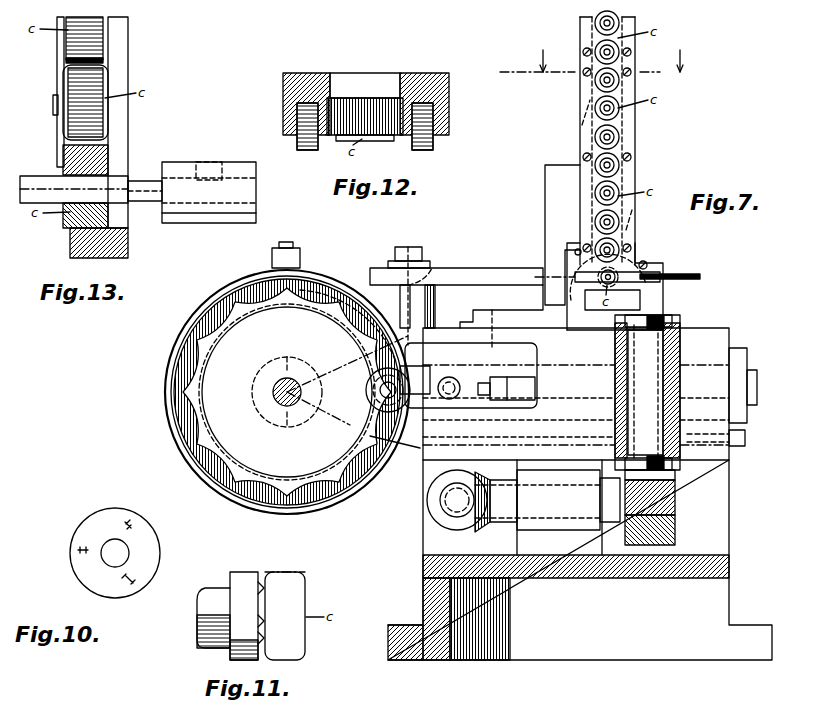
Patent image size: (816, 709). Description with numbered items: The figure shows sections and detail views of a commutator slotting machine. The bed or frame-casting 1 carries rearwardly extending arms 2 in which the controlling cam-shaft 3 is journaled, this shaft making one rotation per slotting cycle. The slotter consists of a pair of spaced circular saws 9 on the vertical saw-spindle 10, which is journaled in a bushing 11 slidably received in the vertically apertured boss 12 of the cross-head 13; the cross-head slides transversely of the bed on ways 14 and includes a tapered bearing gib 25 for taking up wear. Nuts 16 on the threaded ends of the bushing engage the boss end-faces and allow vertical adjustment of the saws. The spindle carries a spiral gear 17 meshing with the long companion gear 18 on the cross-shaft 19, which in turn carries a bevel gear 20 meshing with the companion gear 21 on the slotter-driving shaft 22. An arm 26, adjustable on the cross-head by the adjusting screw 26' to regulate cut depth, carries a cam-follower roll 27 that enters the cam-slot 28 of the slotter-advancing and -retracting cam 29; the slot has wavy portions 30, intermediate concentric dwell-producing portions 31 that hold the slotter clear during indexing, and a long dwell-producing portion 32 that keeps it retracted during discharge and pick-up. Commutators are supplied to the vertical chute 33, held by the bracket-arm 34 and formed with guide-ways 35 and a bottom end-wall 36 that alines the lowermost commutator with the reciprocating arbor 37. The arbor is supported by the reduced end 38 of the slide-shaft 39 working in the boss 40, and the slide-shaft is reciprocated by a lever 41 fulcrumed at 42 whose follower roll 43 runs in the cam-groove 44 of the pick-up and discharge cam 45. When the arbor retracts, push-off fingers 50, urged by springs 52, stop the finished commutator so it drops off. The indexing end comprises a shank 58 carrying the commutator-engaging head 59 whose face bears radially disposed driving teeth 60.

In FIG. 7, the bed or frame-casting 1 is at (432, 544).
In FIG. 7, the rearwardly extending arms 2 is at (310, 356).
In FIG. 7, the controlling cam-shaft 3 is at (273, 388).
In FIG. 7, the circular slot-cutters or saws 9 is at (660, 277).
In FIG. 7, the saw-spindle 10 is at (665, 377).
In FIG. 7, the bushing 11 is at (662, 337).
In FIG. 7, the vertically apertured boss 12 is at (696, 397).
In FIG. 7, the cross-head 13 is at (523, 335).
In FIG. 7, the ways 14 is at (490, 312).
In FIG. 7, the nuts 16 is at (673, 320).
In FIG. 7, the spiral gear 17 is at (676, 494).
In FIG. 7, the companion gear 18 is at (676, 529).
In FIG. 7, the cross-shaft 19 is at (568, 519).
In FIG. 7, the bevel gear 20 is at (483, 525).
In FIG. 7, the companion gear 21 is at (428, 486).
In FIG. 7, the slotter-driving shaft 22 is at (440, 507).
In FIG. 7, the bearing gib 25 is at (558, 437).
In FIG. 7, the arm 26 is at (468, 369).
In FIG. 7, the adjusting screw 26' is at (486, 381).
In FIG. 7, the cam-follower roll 27 is at (368, 398).
In FIG. 7, the cam-slot 28 is at (288, 492).
In FIG. 7, the slotter-advancing and -retracting cam 29 is at (313, 512).
In FIG. 7, the wavy portions 30 is at (260, 312).
In FIG. 7, the concentric dwell-producing portions 31 is at (253, 330).
In FIG. 7, the long dwell-producing portion 32 is at (353, 448).
In FIG. 13, the vertical magazine or chute 33 is at (115, 45).
In FIG. 12, the vertical magazine or chute 33 is at (435, 82).
In FIG. 7, the vertical magazine or chute 33 is at (630, 172).
In FIG. 7, the bracket-arm 34 is at (552, 194).
In FIG. 12, the commutator guide-ways 35 is at (400, 108).
In FIG. 7, the commutator guide-ways 35 is at (583, 153).
In FIG. 13, the bottom end-wall 36 is at (80, 240).
In FIG. 13, the commutator pick-up and supporting arbor 37 is at (135, 184).
In FIG. 13, the reduced end 38 is at (229, 165).
In FIG. 7, the slide-shaft 39 is at (578, 295).
In FIG. 7, the boss 40 is at (600, 306).
In FIG. 7, the lever 41 is at (478, 272).
In FIG. 7, the fulcrum 42 is at (432, 268).
In FIG. 7, the follower roll 43 is at (298, 292).
In FIG. 7, the cam-groove 44 is at (318, 300).
In FIG. 7, the commutator pick-up and discharge cam 45 is at (338, 320).
In FIG. 13, the push-off fingers 50 is at (30, 178).
In FIG. 7, the push-off fingers 50 is at (575, 277).
In FIG. 7, the springs 52 is at (577, 250).
In FIG. 11, the shank 58 is at (208, 589).
In FIG. 10, the commutator-engaging head 59 is at (158, 550).
In FIG. 11, the commutator-engaging head 59 is at (238, 579).
In FIG. 10, the commutator-engaging and -driving teeth 60 is at (84, 546).
In FIG. 11, the commutator-engaging and -driving teeth 60 is at (262, 619).